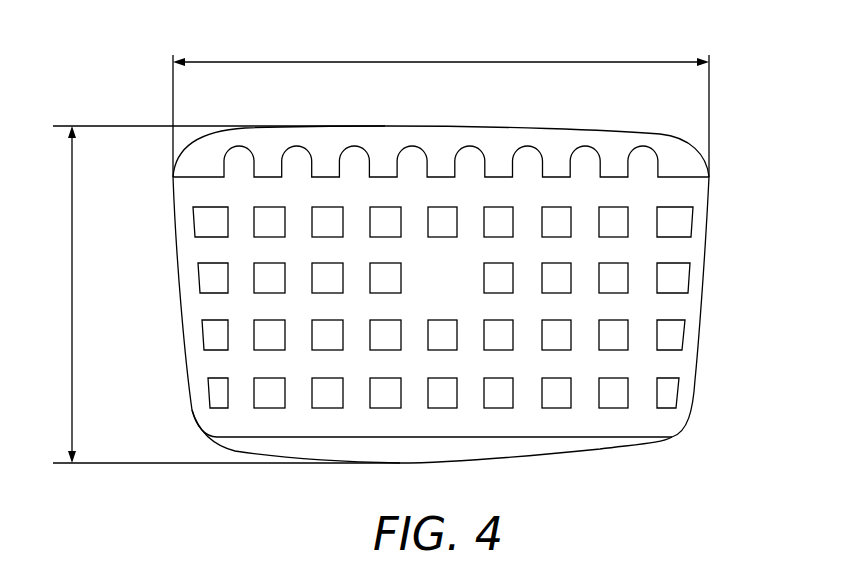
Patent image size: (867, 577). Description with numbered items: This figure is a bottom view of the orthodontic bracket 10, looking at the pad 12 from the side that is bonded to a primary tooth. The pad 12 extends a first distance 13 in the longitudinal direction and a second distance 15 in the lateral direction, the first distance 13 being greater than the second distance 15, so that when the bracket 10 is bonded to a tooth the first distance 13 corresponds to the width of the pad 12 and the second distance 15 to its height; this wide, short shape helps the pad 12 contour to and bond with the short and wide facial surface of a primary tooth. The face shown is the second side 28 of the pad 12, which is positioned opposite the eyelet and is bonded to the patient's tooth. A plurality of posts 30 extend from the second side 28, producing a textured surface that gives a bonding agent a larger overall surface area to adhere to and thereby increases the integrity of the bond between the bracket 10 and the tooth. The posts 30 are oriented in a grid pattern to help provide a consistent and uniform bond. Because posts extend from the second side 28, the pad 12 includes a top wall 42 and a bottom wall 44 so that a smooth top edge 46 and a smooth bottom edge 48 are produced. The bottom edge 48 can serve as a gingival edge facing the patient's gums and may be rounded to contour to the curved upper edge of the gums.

The bracket 10 is at (771, 128).
The pad 12 is at (697, 257).
The first distance 13 is at (447, 62).
The second distance 15 is at (72, 282).
The second side 28 is at (205, 365).
The posts 30 is at (200, 213).
The top wall 42 is at (612, 162).
The bottom wall 44 is at (542, 450).
The top edge 46 is at (557, 140).
The bottom edge 48 is at (620, 453).